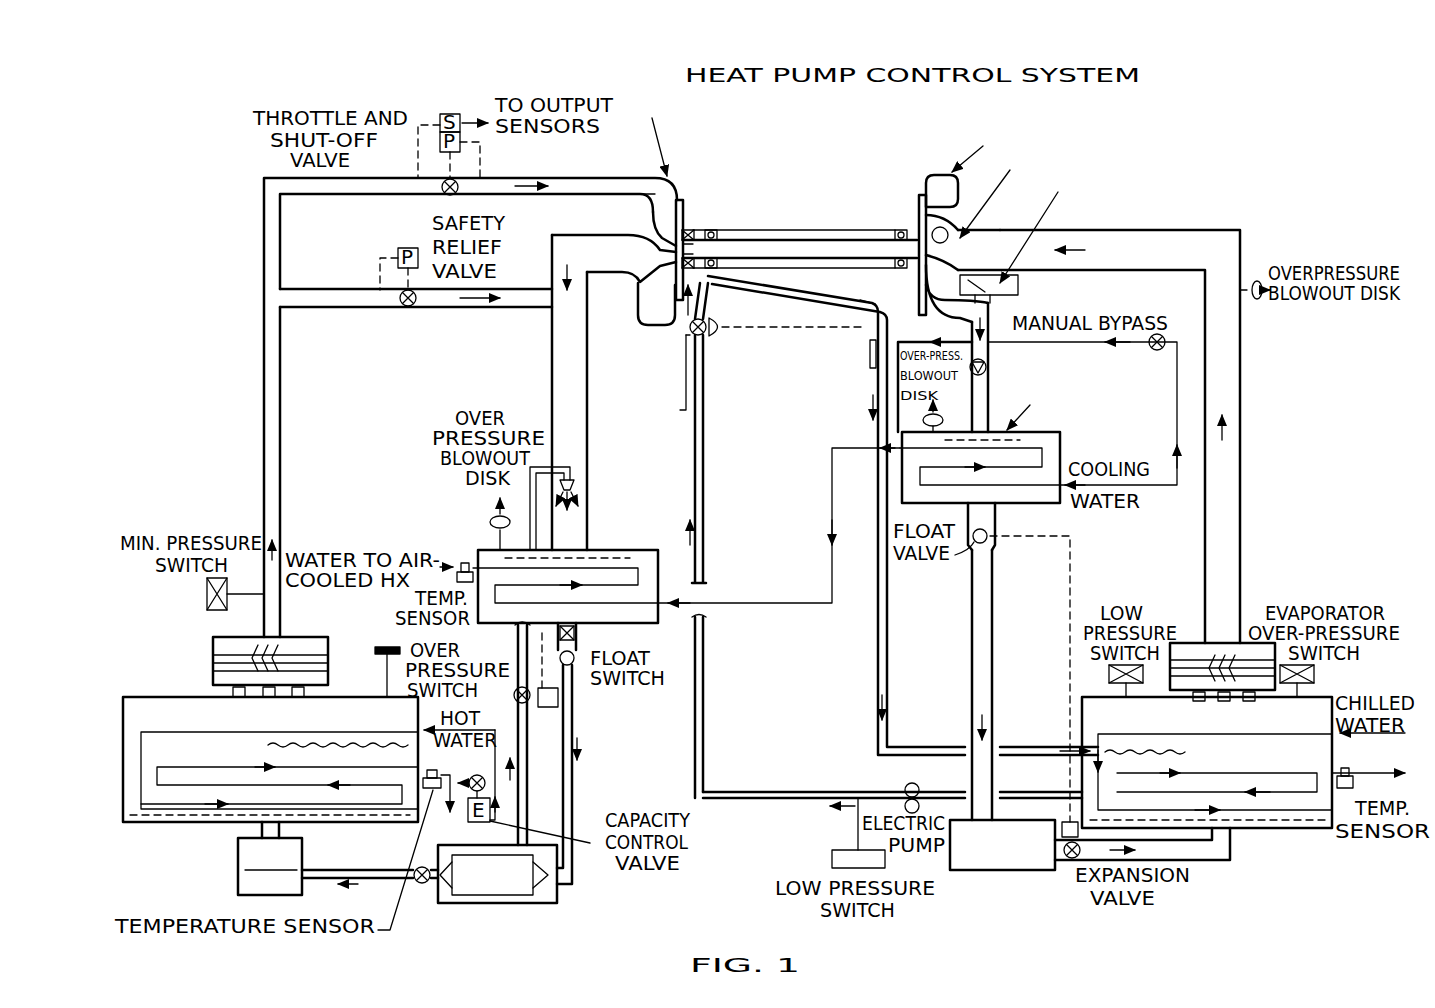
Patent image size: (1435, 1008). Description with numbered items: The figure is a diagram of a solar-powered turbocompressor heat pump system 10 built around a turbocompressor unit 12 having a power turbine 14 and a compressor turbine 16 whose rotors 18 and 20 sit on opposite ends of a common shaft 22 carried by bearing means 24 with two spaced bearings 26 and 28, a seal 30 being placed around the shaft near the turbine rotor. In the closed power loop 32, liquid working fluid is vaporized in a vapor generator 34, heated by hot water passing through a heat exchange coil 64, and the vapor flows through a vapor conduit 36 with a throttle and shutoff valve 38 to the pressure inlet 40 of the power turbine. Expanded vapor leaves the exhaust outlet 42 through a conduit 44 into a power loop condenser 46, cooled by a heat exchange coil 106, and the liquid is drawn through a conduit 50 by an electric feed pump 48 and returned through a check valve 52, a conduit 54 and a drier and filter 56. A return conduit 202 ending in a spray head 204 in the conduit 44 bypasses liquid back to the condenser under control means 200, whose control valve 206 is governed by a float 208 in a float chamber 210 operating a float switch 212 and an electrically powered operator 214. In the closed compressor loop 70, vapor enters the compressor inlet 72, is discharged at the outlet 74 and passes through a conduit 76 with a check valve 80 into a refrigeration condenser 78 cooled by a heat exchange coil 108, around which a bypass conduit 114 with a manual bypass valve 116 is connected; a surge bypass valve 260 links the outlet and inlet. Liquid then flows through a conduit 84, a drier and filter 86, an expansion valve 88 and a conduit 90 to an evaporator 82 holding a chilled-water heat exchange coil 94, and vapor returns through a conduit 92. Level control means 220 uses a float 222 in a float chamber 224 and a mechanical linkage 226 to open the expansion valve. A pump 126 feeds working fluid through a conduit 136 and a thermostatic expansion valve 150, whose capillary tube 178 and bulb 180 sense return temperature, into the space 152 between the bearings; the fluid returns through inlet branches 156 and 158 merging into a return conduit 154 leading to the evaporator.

The solar-powered turbocompressor heat pump system 10 is at (1292, 118).
The turbocompressor unit 12 is at (876, 124).
The power turbine 14 is at (707, 144).
The compressor turbine 16 is at (1034, 224).
The power turbine rotor 18 is at (668, 240).
The compressor rotor 20 is at (949, 223).
The common shaft 22 is at (768, 250).
The bearing means 24 is at (842, 176).
The bearing 26 is at (714, 228).
The bearing 28 is at (900, 228).
The seal 30 is at (692, 228).
The closed power loop 32 is at (262, 178).
The vapor generator 34 is at (148, 715).
The vapor conduit 36 is at (275, 238).
The vapor flow control valve 38 is at (445, 195).
The pressure inlet 40 is at (648, 180).
The exhaust outlet 42 is at (640, 294).
The conduit 44 is at (548, 345).
The power loop condenser 46 is at (480, 552).
The feed pump 48 is at (520, 905).
The conduit 50 is at (572, 790).
The check valve 52 is at (422, 885).
The conduit 54 is at (380, 878).
The combination drier and filter 56 is at (236, 870).
The heat exchange coil 64 is at (140, 768).
The closed compressor loop 70 is at (1248, 230).
The inlet 72 is at (968, 250).
The outlet 74 is at (937, 367).
The conduit 76 is at (993, 312).
The refrigeration condenser 78 is at (1062, 450).
The check valve 80 is at (996, 372).
The evaporator 82 is at (1332, 700).
The conduit 84 is at (995, 625).
The combination drier and filter 86 is at (985, 872).
The expansion valve 88 is at (1126, 876).
The conduit 90 is at (1225, 870).
The conduit 92 is at (1242, 400).
The heat exchange coil 94 is at (1282, 810).
The heat exchange coil 106 is at (518, 605).
The heat exchange coil 108 is at (1000, 492).
The bypass conduit 114 is at (1080, 345).
The manual bypass valve 116 is at (1163, 335).
The pump 126 is at (905, 788).
The conduit 136 is at (705, 455).
The expansion valve 150 is at (642, 388).
The space 152 is at (780, 258).
The return conduit 154 is at (877, 430).
The inlet branch 156 is at (768, 300).
The inlet branch 158 is at (866, 300).
The capillary tube 178 is at (724, 340).
The bulb 180 is at (870, 352).
The control means 200 is at (632, 760).
The return conduit 202 is at (545, 465).
The spray head 204 is at (574, 492).
The control valve 206 is at (525, 725).
The float 208 is at (575, 690).
The float chamber 210 is at (562, 700).
The float switch 212 is at (578, 633).
The electrically powered operator 214 is at (575, 720).
The level control means 220 is at (972, 640).
The float 222 is at (972, 570).
The float chamber 224 is at (972, 600).
The mechanical linkage 226 is at (1070, 575).
The surge bypass valve 260 is at (1151, 232).